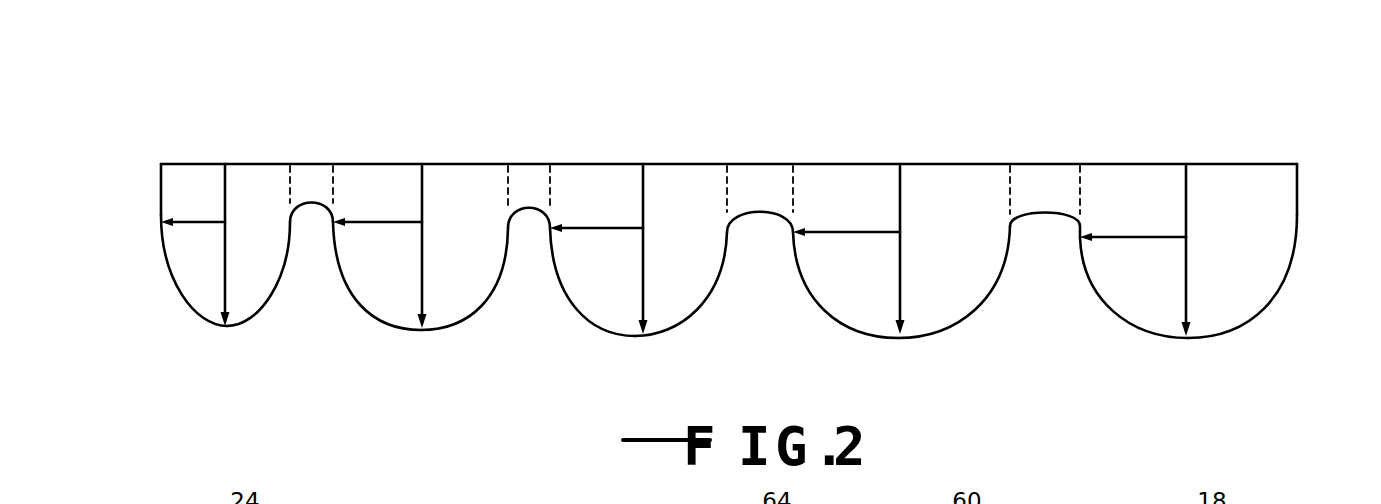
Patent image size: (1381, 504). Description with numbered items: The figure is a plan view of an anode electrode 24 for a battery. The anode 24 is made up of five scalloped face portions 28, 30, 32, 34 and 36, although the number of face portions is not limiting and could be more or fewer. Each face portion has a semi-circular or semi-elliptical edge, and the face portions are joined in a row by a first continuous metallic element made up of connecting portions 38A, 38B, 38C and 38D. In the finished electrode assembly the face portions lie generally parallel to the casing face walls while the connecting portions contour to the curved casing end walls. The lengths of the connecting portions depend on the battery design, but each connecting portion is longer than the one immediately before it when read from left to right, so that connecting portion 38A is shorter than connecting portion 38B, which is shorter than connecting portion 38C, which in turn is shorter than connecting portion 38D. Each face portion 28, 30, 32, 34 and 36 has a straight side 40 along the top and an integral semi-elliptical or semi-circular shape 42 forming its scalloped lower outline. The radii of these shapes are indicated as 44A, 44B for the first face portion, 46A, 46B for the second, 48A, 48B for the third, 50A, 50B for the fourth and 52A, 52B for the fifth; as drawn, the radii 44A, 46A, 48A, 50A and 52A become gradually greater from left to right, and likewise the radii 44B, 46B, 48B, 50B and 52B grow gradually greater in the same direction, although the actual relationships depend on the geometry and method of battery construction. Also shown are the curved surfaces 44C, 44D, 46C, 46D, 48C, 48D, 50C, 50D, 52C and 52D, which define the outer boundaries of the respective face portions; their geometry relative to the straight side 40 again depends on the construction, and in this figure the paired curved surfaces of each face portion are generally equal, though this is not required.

The anode electrode 24 is at (1326, 172).
The anode face portion 28 is at (167, 235).
The anode face portion 30 is at (396, 253).
The anode face portion 32 is at (613, 238).
The anode face portion 34 is at (870, 241).
The anode face portion 36 is at (1159, 247).
The connecting portion 38A is at (317, 198).
The connecting portion 38B is at (533, 202).
The connecting portion 38C is at (762, 200).
The connecting portion 38D is at (1047, 202).
The straight side 40 is at (161, 185).
The semi-elliptical or semi-circular shape 42 is at (167, 312).
The radius 44A is at (185, 223).
The radius 44B is at (224, 280).
The curved surface 44C is at (167, 275).
The curved surface 44D is at (247, 327).
The radius 46A is at (368, 280).
The radius 46B is at (422, 285).
The curved surface 46C is at (378, 327).
The curved surface 46D is at (447, 332).
The radius 48A is at (600, 230).
The radius 48B is at (643, 288).
The curved surface 48C is at (590, 323).
The curved surface 48D is at (670, 334).
The radius 50A is at (843, 233).
The radius 50B is at (898, 278).
The curved surface 50C is at (847, 325).
The curved surface 50D is at (945, 328).
The radius 52A is at (1138, 238).
The radius 52B is at (1185, 268).
The curved surface 52C is at (1138, 330).
The curved surface 52D is at (1253, 322).